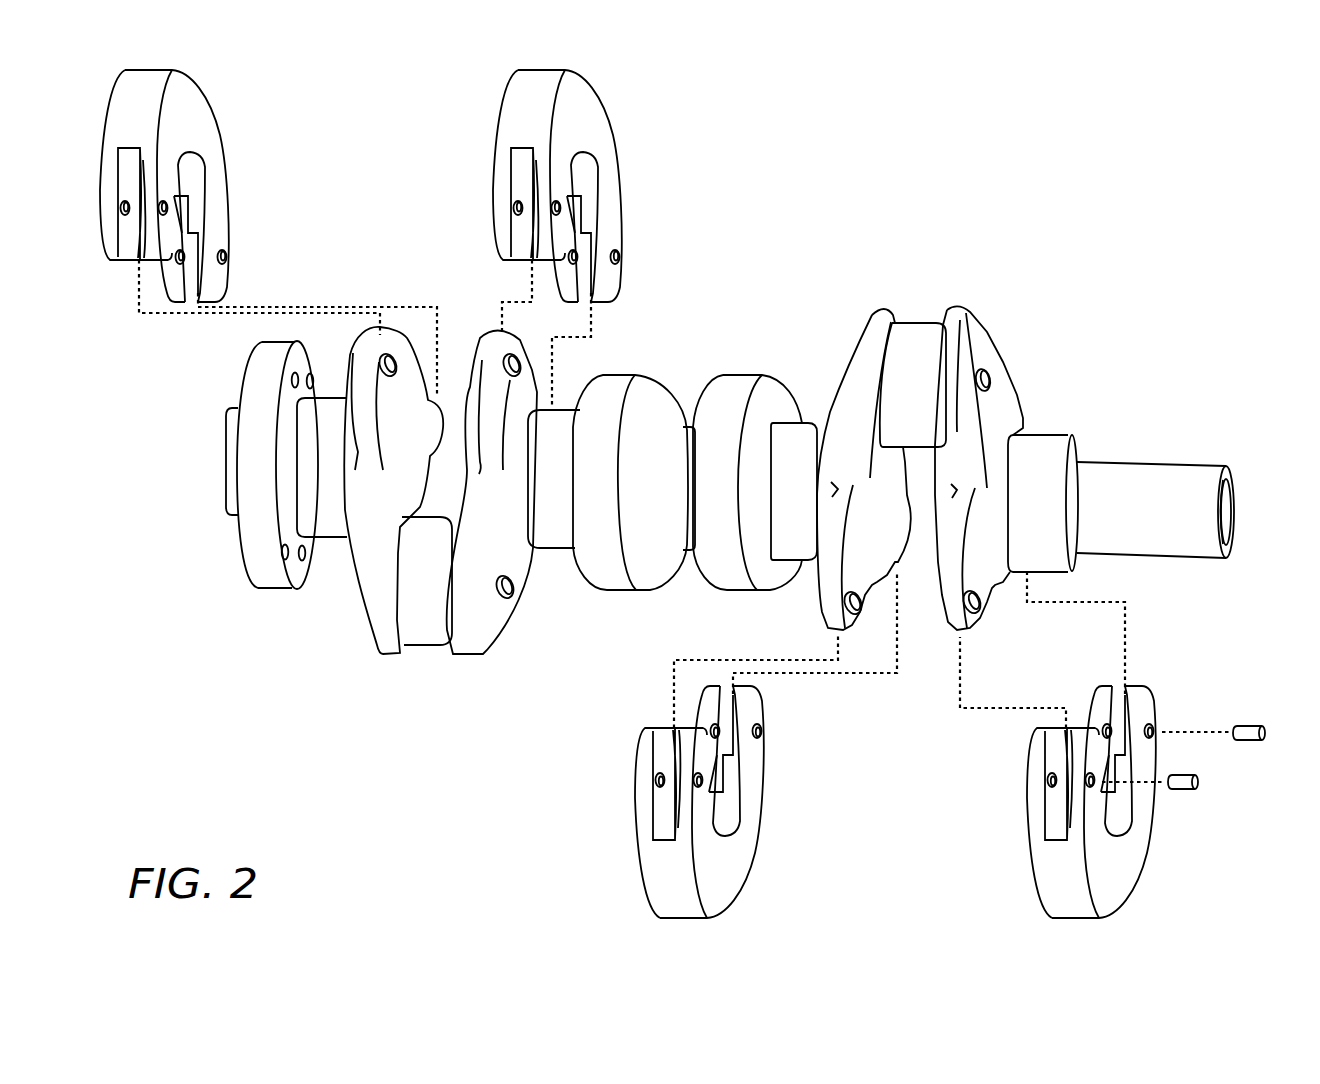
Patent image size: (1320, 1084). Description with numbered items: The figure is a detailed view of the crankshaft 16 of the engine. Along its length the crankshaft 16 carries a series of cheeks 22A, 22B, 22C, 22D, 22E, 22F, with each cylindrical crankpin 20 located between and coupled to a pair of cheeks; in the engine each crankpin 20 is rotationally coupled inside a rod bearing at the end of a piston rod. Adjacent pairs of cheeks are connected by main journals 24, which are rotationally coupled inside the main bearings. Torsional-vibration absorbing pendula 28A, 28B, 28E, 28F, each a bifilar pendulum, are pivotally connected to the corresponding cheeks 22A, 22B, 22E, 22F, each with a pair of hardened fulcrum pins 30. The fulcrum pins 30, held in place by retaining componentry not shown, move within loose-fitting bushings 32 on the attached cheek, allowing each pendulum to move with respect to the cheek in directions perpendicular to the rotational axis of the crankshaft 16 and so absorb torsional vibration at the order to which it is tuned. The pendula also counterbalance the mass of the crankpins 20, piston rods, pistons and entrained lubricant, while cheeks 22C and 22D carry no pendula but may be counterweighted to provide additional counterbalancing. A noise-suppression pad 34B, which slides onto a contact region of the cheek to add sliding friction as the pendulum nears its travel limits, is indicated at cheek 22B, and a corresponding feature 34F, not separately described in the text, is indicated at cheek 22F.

The crankshaft 16 is at (1199, 226).
The crankpin 20 is at (416, 555).
The cheek 22A is at (352, 522).
The cheek 22B is at (493, 562).
The cheek 22C is at (635, 440).
The cheek 22D is at (756, 418).
The cheek 22E is at (855, 548).
The cheek 22F is at (966, 565).
The main journal 24 is at (306, 474).
The torsional-vibration absorbing pendulum 28A is at (170, 130).
The torsional-vibration absorbing pendulum 28B is at (563, 130).
The torsional-vibration absorbing pendulum 28E is at (705, 875).
The torsional-vibration absorbing pendulum 28F is at (1097, 876).
The hardened fulcrum pin 30 is at (1252, 742).
The loose-fitting bushing 32 is at (394, 374).
The noise-suppression pad 34B is at (505, 600).
The oil hole 34F is at (977, 386).